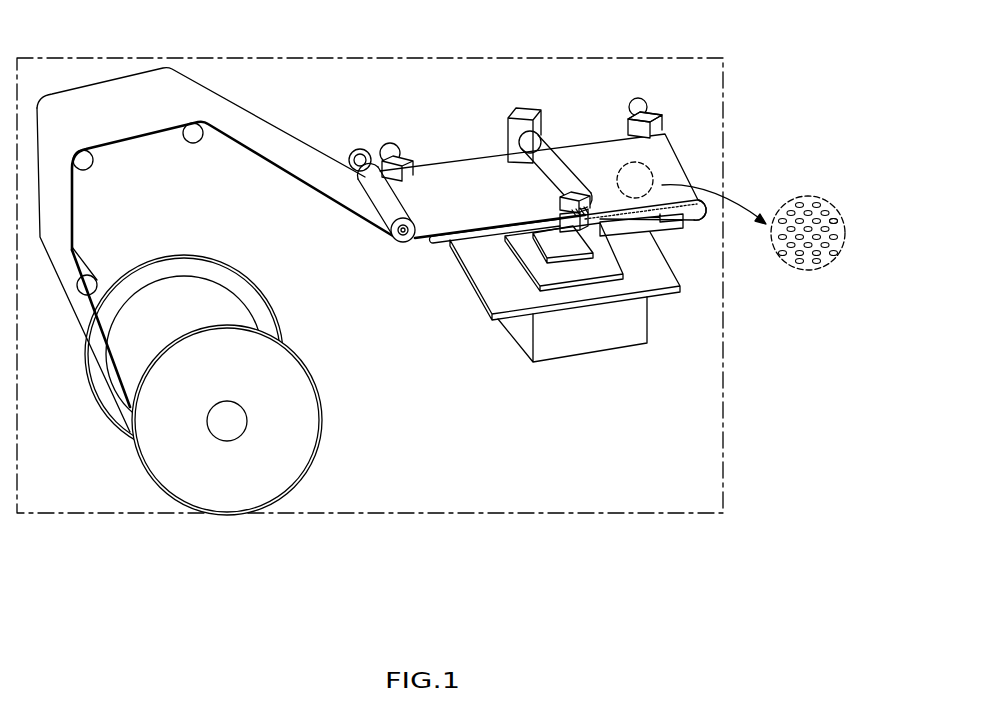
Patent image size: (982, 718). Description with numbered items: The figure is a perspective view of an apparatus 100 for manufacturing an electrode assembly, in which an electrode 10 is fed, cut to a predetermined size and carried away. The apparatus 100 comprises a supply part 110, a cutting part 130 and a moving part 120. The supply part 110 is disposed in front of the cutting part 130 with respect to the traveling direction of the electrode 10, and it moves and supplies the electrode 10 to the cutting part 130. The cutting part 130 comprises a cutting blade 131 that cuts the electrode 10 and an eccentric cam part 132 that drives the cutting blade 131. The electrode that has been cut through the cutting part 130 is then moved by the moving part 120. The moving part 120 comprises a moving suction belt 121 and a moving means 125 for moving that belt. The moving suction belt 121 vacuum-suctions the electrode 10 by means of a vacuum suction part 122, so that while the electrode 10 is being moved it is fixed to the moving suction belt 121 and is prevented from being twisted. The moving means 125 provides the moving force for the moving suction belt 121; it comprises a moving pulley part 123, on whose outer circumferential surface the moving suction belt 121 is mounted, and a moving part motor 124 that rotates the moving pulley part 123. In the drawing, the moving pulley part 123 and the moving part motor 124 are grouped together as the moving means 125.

The electrode 10 is at (453, 185).
The apparatus for manufacturing an electrode assembly 100 is at (580, 87).
The supply part 110 is at (477, 239).
The moving part 120 is at (699, 174).
The moving suction belt 121 is at (808, 196).
The vacuum suction part 122 is at (834, 219).
The moving pulley part 123 is at (707, 213).
The moving part motor 124 is at (642, 100).
The moving means 125 is at (835, 387).
The cutting part 130 is at (523, 101).
The cutting blade 131 is at (608, 222).
The eccentric cam part 132 is at (580, 192).